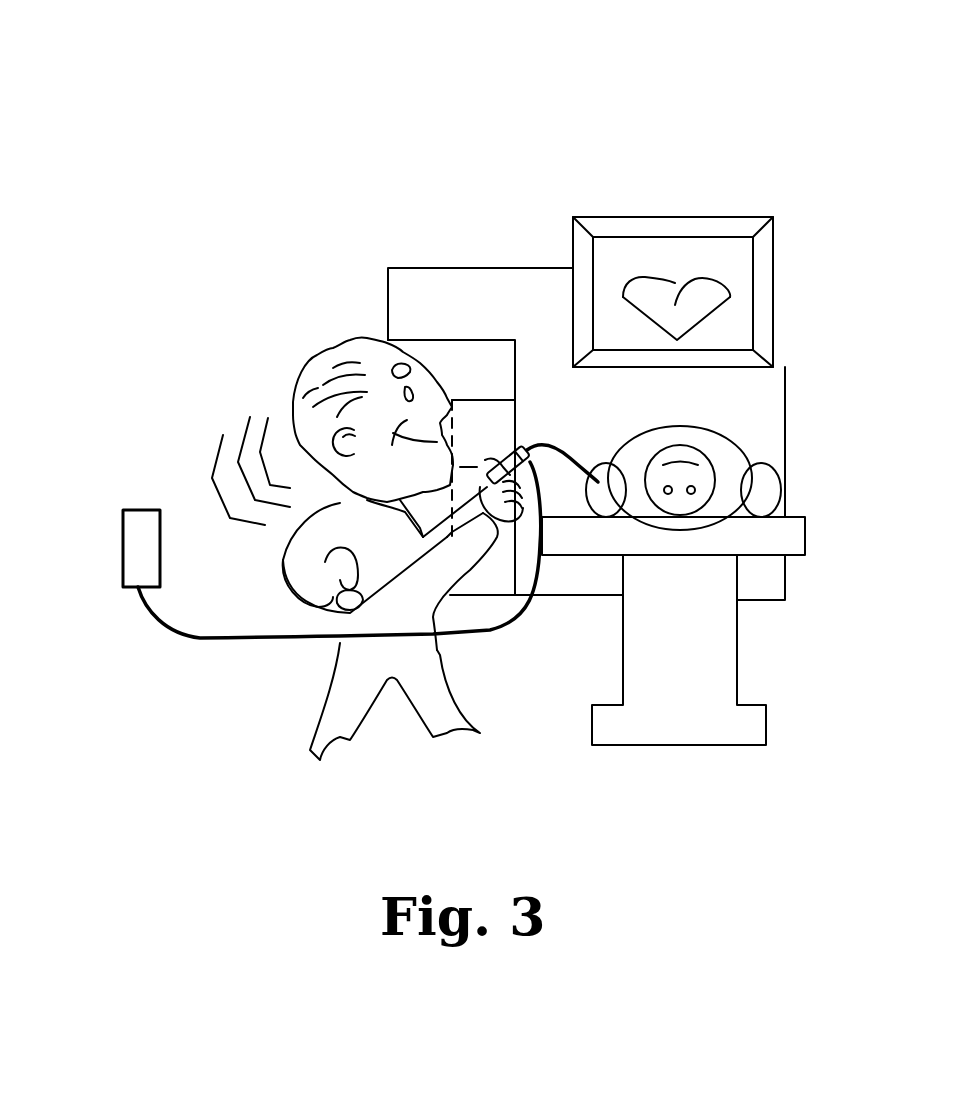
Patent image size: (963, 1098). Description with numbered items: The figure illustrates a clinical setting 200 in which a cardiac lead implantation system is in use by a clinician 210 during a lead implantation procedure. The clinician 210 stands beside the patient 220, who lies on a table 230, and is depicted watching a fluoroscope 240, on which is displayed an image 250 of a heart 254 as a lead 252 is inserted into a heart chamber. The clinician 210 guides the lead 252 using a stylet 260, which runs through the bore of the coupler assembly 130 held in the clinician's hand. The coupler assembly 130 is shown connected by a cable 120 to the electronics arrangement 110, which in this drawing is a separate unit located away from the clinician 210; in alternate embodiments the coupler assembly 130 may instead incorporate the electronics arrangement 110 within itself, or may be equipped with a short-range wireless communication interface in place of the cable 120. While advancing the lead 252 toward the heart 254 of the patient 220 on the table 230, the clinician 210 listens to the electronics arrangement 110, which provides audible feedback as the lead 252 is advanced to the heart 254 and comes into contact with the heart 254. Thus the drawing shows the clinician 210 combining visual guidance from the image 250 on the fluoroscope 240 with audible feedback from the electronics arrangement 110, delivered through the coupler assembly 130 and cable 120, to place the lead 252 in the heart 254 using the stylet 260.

The clinical setting 200 is at (232, 67).
The electronics arrangement 110 is at (120, 525).
The cable 120 is at (187, 643).
The coupler assembly 130 is at (513, 463).
The clinician 210 is at (318, 755).
The patient 220 is at (775, 487).
The examination table 230 is at (768, 742).
The fluoroscope 240 is at (648, 235).
The image 250 is at (672, 260).
The lead 252 is at (733, 270).
The heart 254 is at (640, 293).
The stylet 260 is at (308, 622).